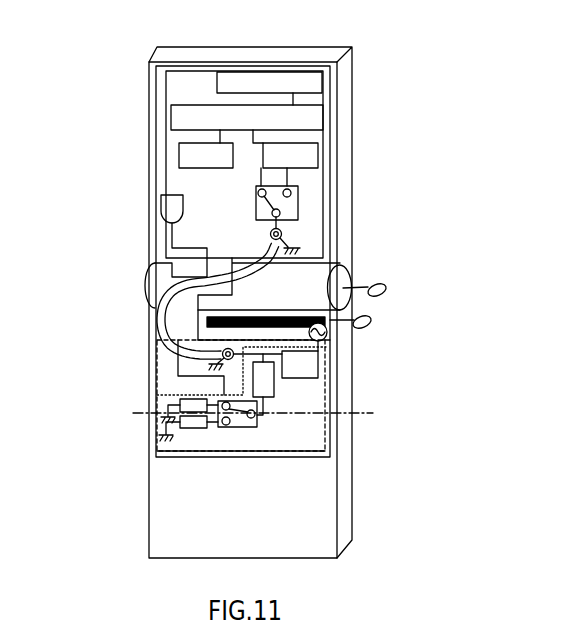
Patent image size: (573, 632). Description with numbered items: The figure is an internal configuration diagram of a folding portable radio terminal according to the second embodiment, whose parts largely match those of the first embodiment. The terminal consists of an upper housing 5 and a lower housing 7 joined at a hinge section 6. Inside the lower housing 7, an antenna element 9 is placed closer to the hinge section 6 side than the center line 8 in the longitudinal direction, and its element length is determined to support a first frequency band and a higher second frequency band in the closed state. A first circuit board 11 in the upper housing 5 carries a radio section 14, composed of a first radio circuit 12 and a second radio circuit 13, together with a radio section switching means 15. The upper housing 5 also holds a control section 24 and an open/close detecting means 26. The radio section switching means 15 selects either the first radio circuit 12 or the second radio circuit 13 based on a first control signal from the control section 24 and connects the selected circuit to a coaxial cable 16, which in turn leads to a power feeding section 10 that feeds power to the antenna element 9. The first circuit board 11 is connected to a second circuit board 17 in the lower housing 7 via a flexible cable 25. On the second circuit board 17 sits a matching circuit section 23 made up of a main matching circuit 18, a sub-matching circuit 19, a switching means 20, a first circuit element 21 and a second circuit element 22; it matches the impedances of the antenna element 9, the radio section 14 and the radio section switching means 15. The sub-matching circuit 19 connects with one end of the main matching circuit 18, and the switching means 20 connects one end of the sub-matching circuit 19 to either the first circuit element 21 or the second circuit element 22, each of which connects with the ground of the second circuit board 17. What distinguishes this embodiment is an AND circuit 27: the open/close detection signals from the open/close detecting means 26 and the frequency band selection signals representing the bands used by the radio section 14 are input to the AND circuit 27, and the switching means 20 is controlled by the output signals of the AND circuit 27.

The upper housing 5 is at (275, 53).
The hinge section 6 is at (386, 285).
The lower housing 7 is at (295, 512).
The center line 8 is at (260, 416).
The antenna element 9 is at (370, 317).
The power feeding section 10 is at (327, 333).
The first circuit board 11 is at (170, 85).
The first radio circuit 12 is at (190, 152).
The second radio circuit 13 is at (277, 155).
The radio section 14 is at (326, 157).
The radio section switching means 15 is at (287, 207).
The coaxial cable 16 is at (340, 263).
The second circuit board 17 is at (165, 364).
The main matching circuit 18 is at (318, 357).
The sub-matching circuit 19 is at (268, 387).
The switching means 20 is at (240, 422).
The first circuit element 21 is at (190, 403).
The second circuit element 22 is at (190, 425).
The matching circuit section 23 is at (213, 452).
The control section 24 is at (200, 118).
The flexible cable 25 is at (190, 332).
The open/close detecting means 26 is at (295, 82).
The AND circuit 27 is at (170, 208).